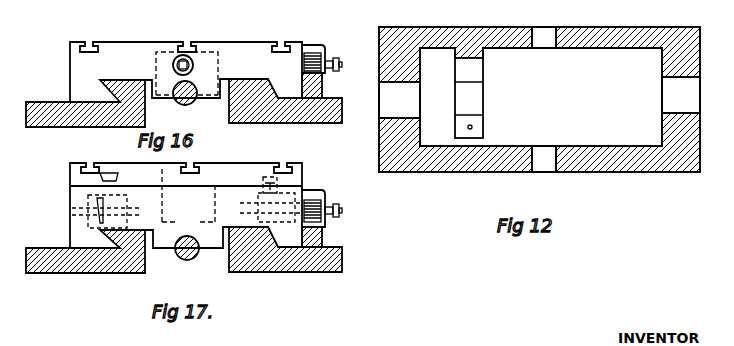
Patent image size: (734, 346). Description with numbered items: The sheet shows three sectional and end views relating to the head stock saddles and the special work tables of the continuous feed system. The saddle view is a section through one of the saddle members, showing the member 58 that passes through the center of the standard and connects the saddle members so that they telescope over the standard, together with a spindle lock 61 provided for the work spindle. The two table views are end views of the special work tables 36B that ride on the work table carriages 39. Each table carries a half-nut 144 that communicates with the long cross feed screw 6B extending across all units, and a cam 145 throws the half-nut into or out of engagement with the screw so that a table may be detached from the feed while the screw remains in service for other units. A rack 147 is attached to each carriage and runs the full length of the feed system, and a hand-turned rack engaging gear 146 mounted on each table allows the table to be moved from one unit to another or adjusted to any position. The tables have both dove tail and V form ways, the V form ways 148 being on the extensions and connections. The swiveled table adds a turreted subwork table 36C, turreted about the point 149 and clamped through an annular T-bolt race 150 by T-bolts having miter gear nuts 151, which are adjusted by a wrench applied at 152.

In FIG. 16, the work table 36B is at (248, 43).
In FIG. 17, the work table 36B is at (303, 185).
In FIG. 17, the turreted subwork table 36C is at (303, 164).
In FIG. 16, the work table carriage 39 is at (106, 88).
In FIG. 17, the work table carriage 39 is at (106, 236).
In FIG. 16, the long cross feed screw 6B is at (176, 100).
In FIG. 17, the long cross feed screw 6B is at (177, 250).
In FIG. 16, the half-nut 144 is at (153, 66).
In FIG. 16, the cam 145 is at (193, 64).
In FIG. 16, the rack engaging gear 146 is at (302, 63).
In FIG. 17, the rack engaging gear 146 is at (336, 210).
In FIG. 16, the rack 147 is at (323, 83).
In FIG. 17, the rack 147 is at (323, 228).
In FIG. 16, the V form ways 148 is at (276, 94).
In FIG. 17, the V form ways 148 is at (274, 246).
In FIG. 17, the turret point 149 is at (205, 168).
In FIG. 17, the annular T-bolt race 150 is at (110, 178).
In FIG. 17, the miter gear nuts 151 is at (120, 206).
In FIG. 17, the wrench provision 152 is at (66, 215).
In FIG. 12, the connecting member 58 is at (573, 48).
In FIG. 12, the spindle lock 61 is at (483, 123).